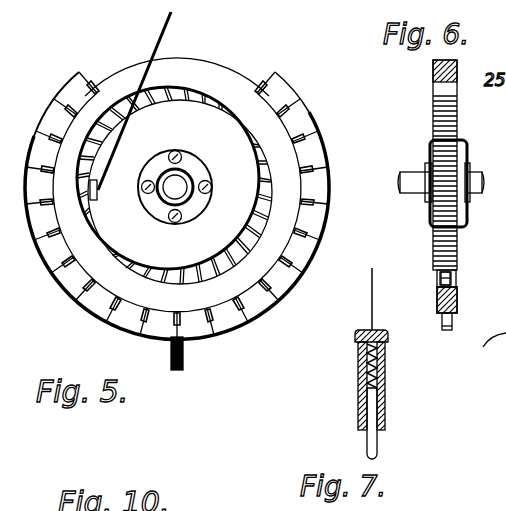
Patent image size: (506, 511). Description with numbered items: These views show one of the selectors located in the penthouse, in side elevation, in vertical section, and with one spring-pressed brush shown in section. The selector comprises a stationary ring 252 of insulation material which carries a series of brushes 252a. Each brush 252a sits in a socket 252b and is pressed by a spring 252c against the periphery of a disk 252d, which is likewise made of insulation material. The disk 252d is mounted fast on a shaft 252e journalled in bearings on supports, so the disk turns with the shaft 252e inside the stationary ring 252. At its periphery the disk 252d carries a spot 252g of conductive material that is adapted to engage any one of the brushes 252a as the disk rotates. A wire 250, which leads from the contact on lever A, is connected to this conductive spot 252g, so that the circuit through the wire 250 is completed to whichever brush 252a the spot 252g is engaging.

In FIG. 5, the wire 250 is at (173, 22).
In FIG. 5, the stationary ring 252 is at (220, 50).
In FIG. 6, the stationary ring 252 is at (433, 67).
In FIG. 6, the brushes 252a is at (440, 279).
In FIG. 7, the brushes 252a is at (372, 447).
In FIG. 7, the sockets 252b is at (385, 393).
In FIG. 7, the springs 252c is at (367, 350).
In FIG. 5, the disk 252d is at (235, 80).
In FIG. 6, the disk 252d is at (441, 245).
In FIG. 5, the shaft 252e is at (177, 184).
In FIG. 5, the spot of conductive material 252g is at (99, 196).